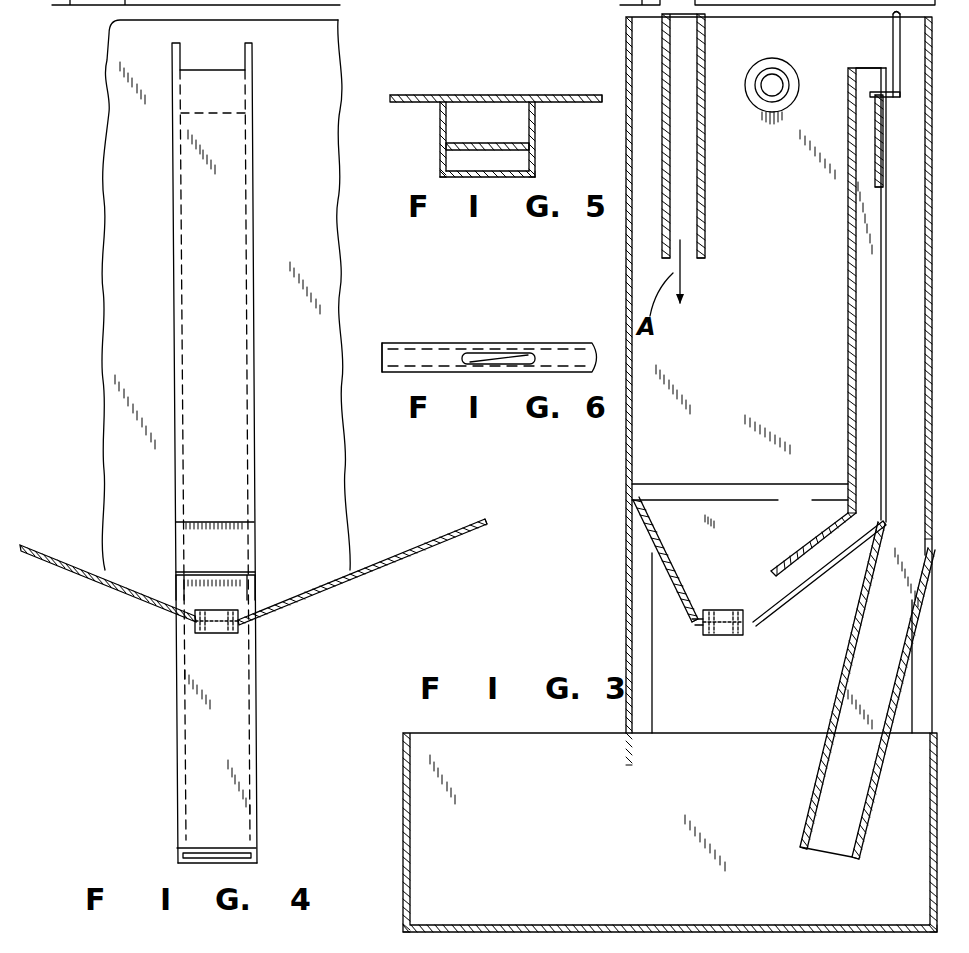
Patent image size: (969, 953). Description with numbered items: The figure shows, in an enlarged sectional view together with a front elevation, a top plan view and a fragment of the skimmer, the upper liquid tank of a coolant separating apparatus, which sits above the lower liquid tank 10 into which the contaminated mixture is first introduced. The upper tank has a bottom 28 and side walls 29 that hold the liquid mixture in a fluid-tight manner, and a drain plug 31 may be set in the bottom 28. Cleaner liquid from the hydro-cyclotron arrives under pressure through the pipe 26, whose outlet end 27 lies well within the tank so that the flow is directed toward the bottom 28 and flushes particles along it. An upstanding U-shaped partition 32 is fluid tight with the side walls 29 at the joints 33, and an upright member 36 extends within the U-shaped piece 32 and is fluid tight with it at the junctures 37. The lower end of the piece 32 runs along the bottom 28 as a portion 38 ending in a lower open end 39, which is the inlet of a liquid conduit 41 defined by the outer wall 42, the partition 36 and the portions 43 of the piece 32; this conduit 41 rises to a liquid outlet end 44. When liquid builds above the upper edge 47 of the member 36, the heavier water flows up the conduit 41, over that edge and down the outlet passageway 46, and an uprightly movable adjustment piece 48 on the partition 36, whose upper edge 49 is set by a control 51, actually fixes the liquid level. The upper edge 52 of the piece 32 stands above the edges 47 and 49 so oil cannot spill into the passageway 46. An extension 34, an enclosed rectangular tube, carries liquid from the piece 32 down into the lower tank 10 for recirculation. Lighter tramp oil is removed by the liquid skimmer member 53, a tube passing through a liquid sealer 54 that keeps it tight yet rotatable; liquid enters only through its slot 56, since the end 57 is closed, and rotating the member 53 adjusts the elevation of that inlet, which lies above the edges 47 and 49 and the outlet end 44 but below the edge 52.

In FIG. 3, the lower liquid tank 10 is at (403, 768).
In FIG. 3, the pipe 26 is at (700, 155).
In FIG. 3, the outlet end 27 is at (693, 258).
In FIG. 4, the bottom 28 is at (103, 578).
In FIG. 3, the bottom 28 is at (678, 578).
In FIG. 4, the side walls 29 is at (102, 377).
In FIG. 5, the side walls 29 is at (570, 100).
In FIG. 3, the side walls 29 is at (627, 455).
In FIG. 3, the drain plug 31 is at (745, 635).
In FIG. 4, the upstanding partition 32 is at (258, 343).
In FIG. 5, the upstanding partition 32 is at (544, 118).
In FIG. 3, the upstanding partition 32 is at (846, 307).
In FIG. 5, the joints 33 is at (512, 103).
In FIG. 4, the extension 34 is at (255, 715).
In FIG. 3, the extension 34 is at (822, 780).
In FIG. 5, the upright member 36 is at (468, 148).
In FIG. 3, the upright member 36 is at (890, 258).
In FIG. 5, the junctures 37 is at (527, 142).
In FIG. 4, the portion 38 is at (256, 542).
In FIG. 3, the portion 38 is at (808, 542).
In FIG. 3, the lower open end 39 is at (785, 590).
In FIG. 5, the liquid conduit 41 is at (470, 158).
In FIG. 3, the liquid conduit 41 is at (860, 362).
In FIG. 4, the outer wall 42 is at (233, 276).
In FIG. 3, the outer wall 42 is at (848, 268).
In FIG. 5, the portions 43 is at (535, 160).
In FIG. 3, the liquid outlet end 44 is at (863, 108).
In FIG. 5, the outlet passageway 46 is at (442, 120).
In FIG. 3, the outlet passageway 46 is at (888, 392).
In FIG. 4, the upper edge 47 is at (228, 112).
In FIG. 3, the upper edge 47 is at (888, 106).
In FIG. 3, the adjustment piece 48 is at (873, 160).
In FIG. 3, the upper edge 49 is at (885, 65).
In FIG. 3, the control 51 is at (893, 20).
In FIG. 3, the upper edge 52 is at (848, 96).
In FIG. 6, the liquid skimmer member 53 is at (430, 348).
In FIG. 3, the liquid skimmer member 53 is at (760, 105).
In FIG. 3, the liquid sealer 54 is at (758, 72).
In FIG. 6, the slot 56 is at (520, 350).
In FIG. 6, the closed end 57 is at (371, 350).